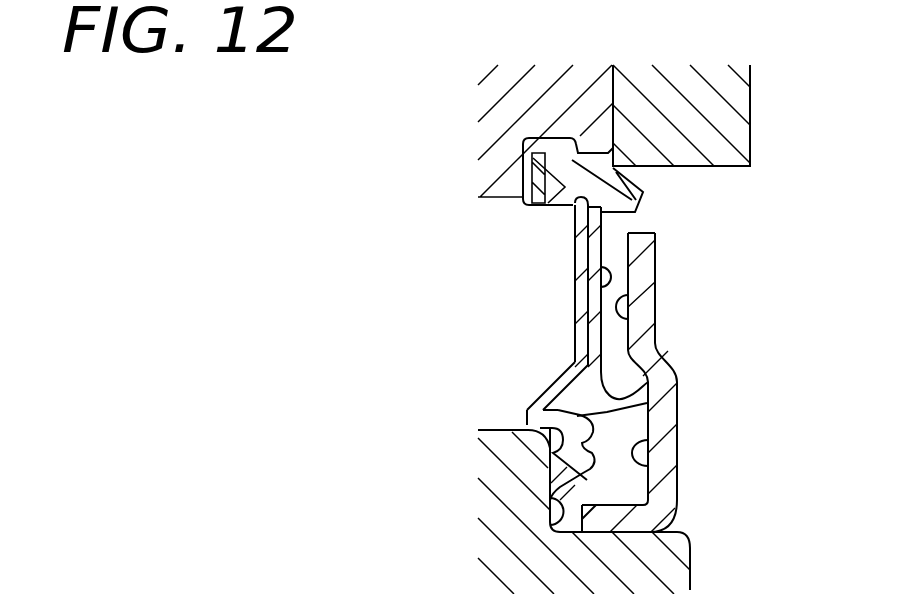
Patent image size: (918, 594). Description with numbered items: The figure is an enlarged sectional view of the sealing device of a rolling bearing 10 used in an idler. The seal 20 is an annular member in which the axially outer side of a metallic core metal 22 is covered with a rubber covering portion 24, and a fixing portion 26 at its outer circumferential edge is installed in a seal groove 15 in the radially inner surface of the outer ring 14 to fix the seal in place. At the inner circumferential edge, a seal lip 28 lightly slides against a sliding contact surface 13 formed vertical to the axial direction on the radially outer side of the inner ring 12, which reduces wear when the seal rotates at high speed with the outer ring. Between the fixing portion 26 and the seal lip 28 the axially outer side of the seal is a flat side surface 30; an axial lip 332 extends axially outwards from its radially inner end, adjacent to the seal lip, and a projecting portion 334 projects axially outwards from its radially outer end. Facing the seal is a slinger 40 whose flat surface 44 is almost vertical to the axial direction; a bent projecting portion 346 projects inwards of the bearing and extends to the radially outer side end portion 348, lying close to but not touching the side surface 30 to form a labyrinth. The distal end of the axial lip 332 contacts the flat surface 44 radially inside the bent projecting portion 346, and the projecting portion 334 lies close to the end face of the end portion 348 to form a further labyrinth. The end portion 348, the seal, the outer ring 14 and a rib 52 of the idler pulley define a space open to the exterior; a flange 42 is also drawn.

The rolling bearing 10 is at (692, 273).
The inner ring 12 is at (622, 577).
The sliding contact surface 13 is at (553, 516).
The outer ring 14 is at (595, 104).
The seal groove 15 is at (548, 167).
The seal 20 is at (574, 234).
The metallic core metal 22 is at (585, 263).
The rubber covering portion 24 is at (532, 205).
The fixing portion 26 is at (553, 146).
The seal lip 28 is at (560, 480).
The side surface 30 is at (610, 280).
The slinger 40 is at (688, 372).
The flange 42 is at (617, 515).
The flat surface 44 is at (638, 452).
The rib 52 is at (695, 139).
The axial lip 332 is at (600, 380).
The projecting portion 334 is at (643, 193).
The bent projecting portion 346 is at (628, 316).
The radially outer side end portion 348 is at (643, 240).